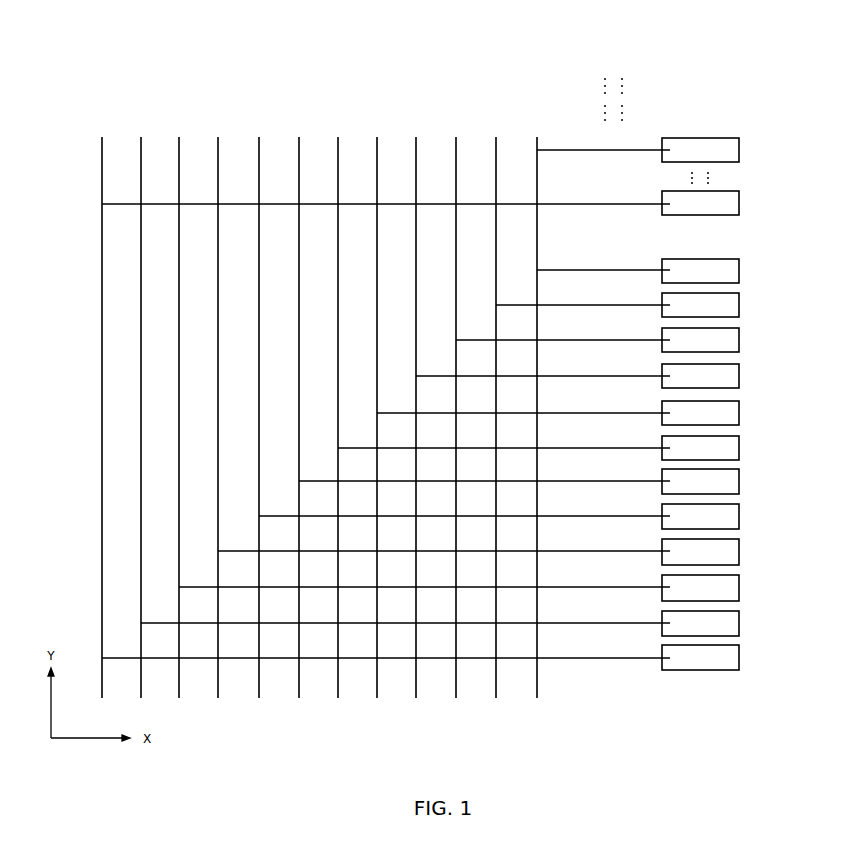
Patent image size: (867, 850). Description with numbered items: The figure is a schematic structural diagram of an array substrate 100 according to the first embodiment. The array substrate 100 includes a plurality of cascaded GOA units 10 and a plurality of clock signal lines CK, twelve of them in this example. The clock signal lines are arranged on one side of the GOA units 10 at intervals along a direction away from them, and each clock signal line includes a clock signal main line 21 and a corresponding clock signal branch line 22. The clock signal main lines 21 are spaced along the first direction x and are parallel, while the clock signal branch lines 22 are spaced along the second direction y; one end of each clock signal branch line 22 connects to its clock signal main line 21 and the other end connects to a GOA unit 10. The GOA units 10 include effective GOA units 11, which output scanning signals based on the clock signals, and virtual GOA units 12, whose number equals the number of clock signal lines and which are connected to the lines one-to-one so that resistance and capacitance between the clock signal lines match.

The array substrate 100 is at (172, 50).
The GOA unit 10 is at (708, 374).
The effective GOA unit 11 is at (722, 154).
The virtual GOA unit 12 is at (728, 272).
The clock signal main line 21 is at (101, 385).
The clock signal branch line 22 is at (558, 660).